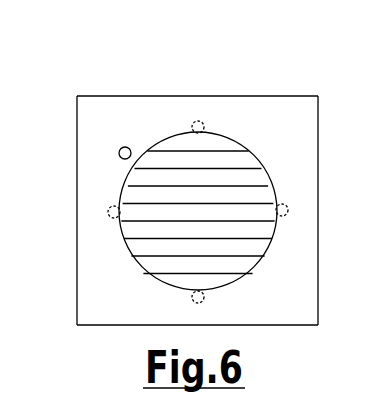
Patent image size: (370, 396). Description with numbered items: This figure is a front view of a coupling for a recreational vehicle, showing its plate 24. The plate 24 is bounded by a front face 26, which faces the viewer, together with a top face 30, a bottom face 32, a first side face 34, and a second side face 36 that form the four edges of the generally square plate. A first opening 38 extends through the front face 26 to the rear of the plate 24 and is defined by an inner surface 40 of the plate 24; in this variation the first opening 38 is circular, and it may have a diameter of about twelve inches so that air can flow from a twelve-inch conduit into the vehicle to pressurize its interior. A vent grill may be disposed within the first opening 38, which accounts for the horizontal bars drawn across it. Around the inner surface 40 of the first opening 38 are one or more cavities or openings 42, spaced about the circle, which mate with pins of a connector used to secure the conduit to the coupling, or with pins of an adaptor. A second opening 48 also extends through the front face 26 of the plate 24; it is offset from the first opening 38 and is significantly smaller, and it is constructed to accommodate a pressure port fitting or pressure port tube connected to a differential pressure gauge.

The plate 24 is at (193, 108).
The front face 26 is at (98, 298).
The top face 30 is at (258, 97).
The bottom face 32 is at (263, 325).
The first side face 34 is at (77, 218).
The second side face 36 is at (318, 280).
The first opening 38 is at (173, 147).
The inner surface 40 is at (136, 185).
The cavities or openings 42 is at (117, 214).
The second opening 48 is at (134, 146).